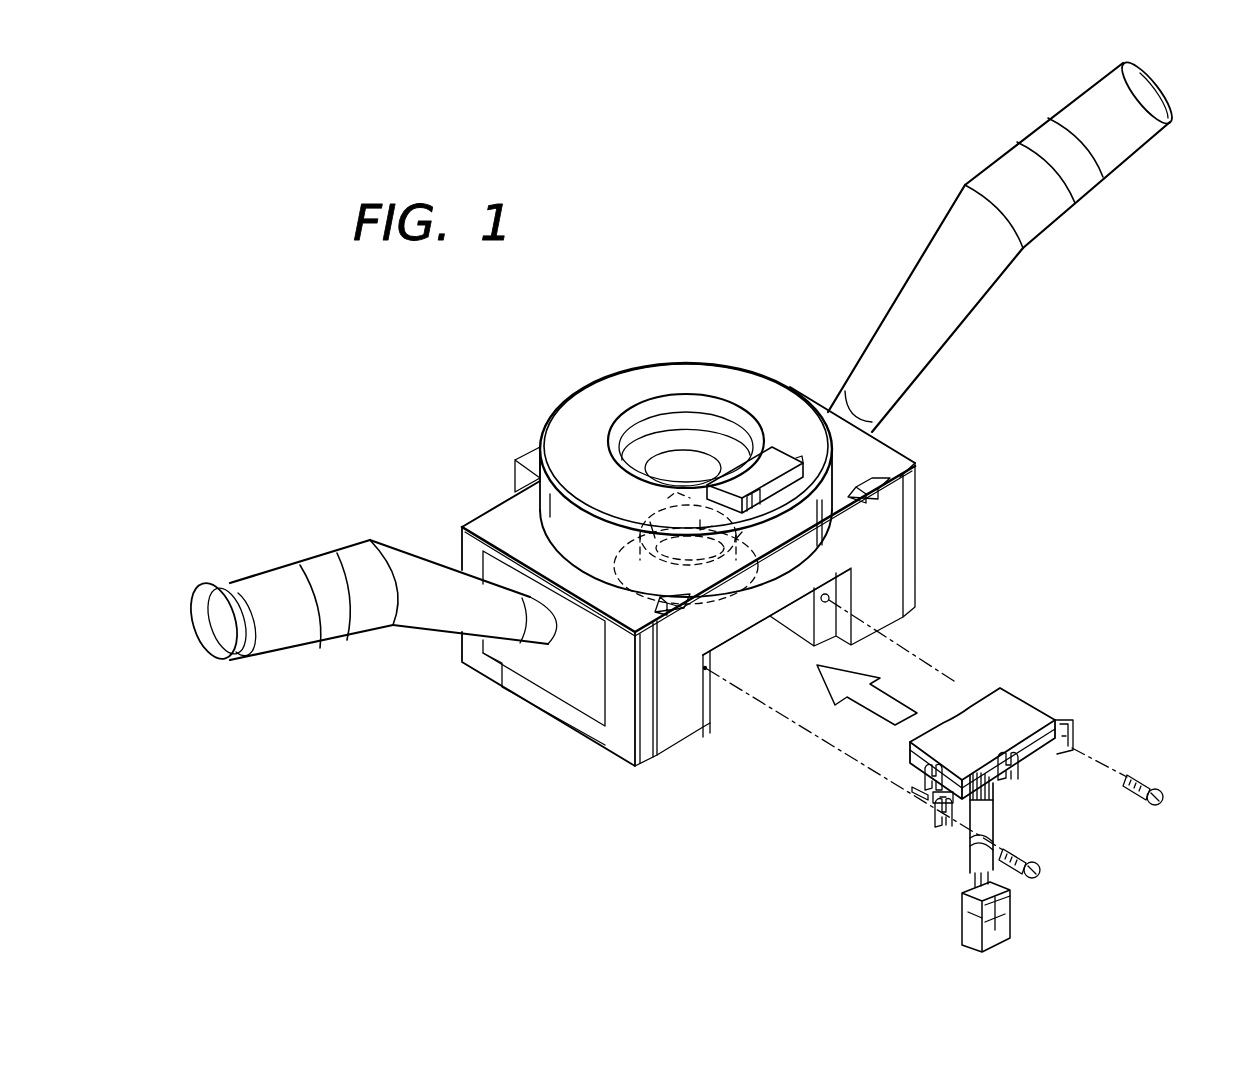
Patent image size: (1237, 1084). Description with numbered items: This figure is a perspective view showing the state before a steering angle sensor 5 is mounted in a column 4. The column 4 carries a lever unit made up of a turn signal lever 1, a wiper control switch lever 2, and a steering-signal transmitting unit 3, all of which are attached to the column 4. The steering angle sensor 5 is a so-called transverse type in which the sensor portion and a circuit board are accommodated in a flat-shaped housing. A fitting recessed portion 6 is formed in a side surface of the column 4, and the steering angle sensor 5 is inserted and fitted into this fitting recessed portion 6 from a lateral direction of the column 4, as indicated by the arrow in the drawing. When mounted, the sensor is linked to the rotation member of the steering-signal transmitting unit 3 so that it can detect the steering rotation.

The turn signal lever 1 is at (1008, 165).
The wiper control switch lever 2 is at (273, 585).
The steering-signal transmitting unit 3 is at (612, 388).
The column 4 is at (880, 517).
The steering angle sensor 5 is at (1060, 672).
The fitting recessed portion 6 is at (737, 670).